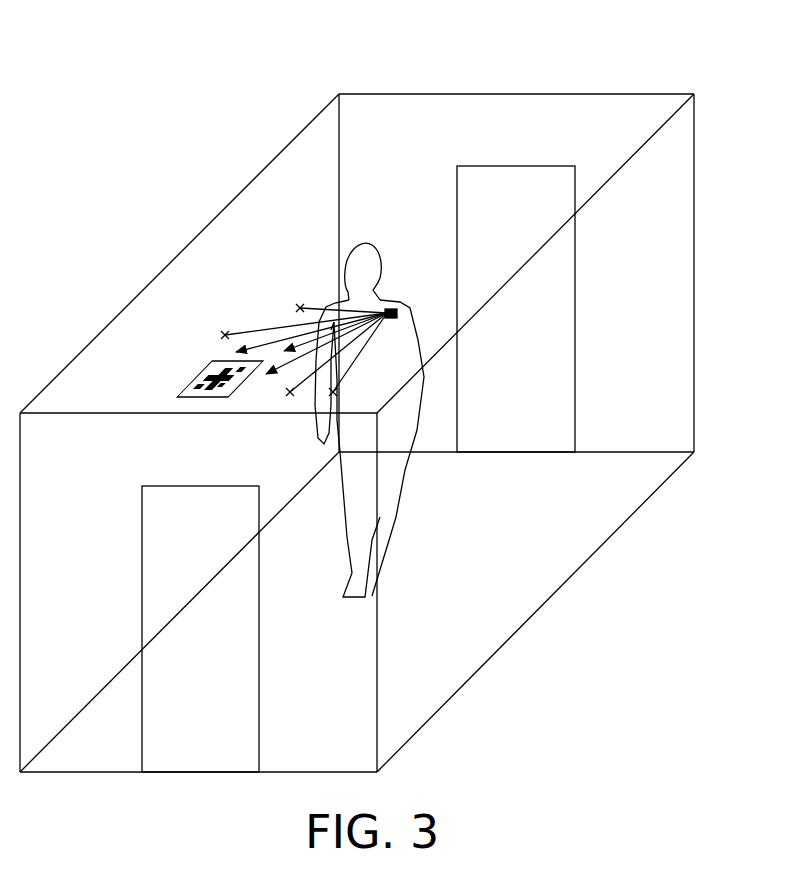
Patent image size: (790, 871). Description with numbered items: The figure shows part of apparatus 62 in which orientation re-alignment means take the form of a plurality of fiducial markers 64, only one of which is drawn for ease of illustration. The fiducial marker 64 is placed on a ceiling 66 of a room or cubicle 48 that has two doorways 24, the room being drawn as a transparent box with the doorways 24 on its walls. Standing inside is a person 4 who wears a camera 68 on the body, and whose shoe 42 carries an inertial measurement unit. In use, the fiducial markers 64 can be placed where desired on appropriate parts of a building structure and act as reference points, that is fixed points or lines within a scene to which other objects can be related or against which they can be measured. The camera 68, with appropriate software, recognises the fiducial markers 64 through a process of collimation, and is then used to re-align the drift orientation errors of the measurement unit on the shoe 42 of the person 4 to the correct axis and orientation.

The person 4 is at (373, 236).
The doorways 24 is at (213, 554).
The shoe 42 is at (339, 601).
The room or cubicle 48 is at (481, 641).
The apparatus 62 is at (680, 63).
The fiducial marker 64 is at (192, 366).
The ceiling 66 is at (286, 173).
The camera 68 is at (392, 308).